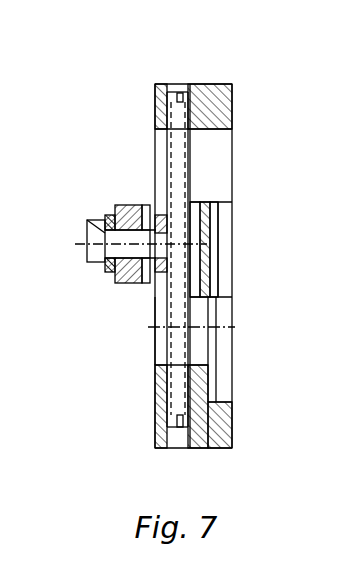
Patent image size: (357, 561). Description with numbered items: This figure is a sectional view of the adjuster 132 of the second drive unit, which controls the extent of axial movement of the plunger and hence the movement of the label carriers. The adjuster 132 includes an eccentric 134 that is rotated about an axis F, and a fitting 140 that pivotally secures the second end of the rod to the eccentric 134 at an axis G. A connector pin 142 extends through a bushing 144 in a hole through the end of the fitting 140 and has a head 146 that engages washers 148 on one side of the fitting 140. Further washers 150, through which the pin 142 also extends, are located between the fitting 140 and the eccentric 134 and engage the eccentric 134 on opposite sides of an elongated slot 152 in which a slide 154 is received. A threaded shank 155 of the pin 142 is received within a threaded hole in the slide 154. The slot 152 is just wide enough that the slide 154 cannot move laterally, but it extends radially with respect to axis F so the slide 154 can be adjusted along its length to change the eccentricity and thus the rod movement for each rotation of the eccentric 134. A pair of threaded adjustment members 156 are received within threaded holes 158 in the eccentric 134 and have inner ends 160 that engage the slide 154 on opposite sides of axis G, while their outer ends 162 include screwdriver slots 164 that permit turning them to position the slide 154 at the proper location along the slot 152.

The adjuster 132 is at (100, 200).
The eccentric 134 is at (156, 358).
The fitting 140 is at (125, 283).
The connector pin 142 is at (88, 221).
The bushing 144 is at (118, 205).
The head 146 is at (92, 273).
The washers 148 is at (110, 283).
The washers 150 is at (148, 205).
The elongated slot 152 is at (212, 203).
The slide 154 is at (200, 228).
The threaded shank 155 is at (210, 262).
The threaded adjustment members 156 is at (190, 165).
The threaded holes 158 is at (171, 92).
The inner ends 160 is at (190, 198).
The outer ends 162 is at (234, 97).
The screwdriver slots 164 is at (182, 93).
The axis G is at (76, 250).
The axis F is at (150, 333).